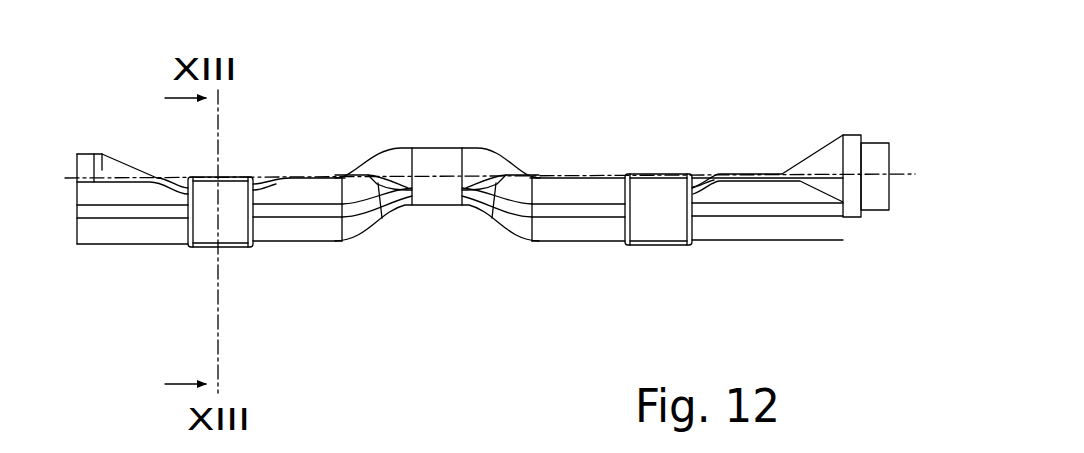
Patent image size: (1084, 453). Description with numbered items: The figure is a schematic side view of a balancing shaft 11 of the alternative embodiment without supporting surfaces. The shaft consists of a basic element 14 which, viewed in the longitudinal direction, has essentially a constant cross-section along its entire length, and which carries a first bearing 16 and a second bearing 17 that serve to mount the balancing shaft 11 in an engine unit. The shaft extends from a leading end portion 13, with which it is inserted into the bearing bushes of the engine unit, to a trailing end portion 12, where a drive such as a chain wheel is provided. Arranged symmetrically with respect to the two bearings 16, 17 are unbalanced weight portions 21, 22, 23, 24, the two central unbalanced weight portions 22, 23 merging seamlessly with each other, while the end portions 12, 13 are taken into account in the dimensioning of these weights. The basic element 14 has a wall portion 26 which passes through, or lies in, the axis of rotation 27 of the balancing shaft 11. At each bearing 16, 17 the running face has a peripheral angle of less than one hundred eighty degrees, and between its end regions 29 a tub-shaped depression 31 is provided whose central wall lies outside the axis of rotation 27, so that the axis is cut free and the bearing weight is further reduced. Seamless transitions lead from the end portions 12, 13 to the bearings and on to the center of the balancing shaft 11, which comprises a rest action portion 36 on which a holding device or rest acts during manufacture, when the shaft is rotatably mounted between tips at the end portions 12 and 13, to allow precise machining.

The balancing shaft 11 is at (604, 104).
The trailing end portion 12 is at (872, 132).
The end portion 13 is at (90, 135).
The basic element 14 is at (485, 242).
The first bearing 16 is at (203, 254).
The second bearing 17 is at (637, 258).
The unbalanced weight portion 21 is at (142, 250).
The unbalanced weight portion 22 is at (315, 255).
The unbalanced weight portion 23 is at (565, 257).
The unbalanced weight portion 24 is at (793, 258).
The wall portion 26 is at (262, 176).
The axis of rotation 27 is at (908, 176).
The end regions of the running face 29 is at (688, 172).
The depression 31 is at (244, 165).
The rest action portion 36 is at (436, 128).